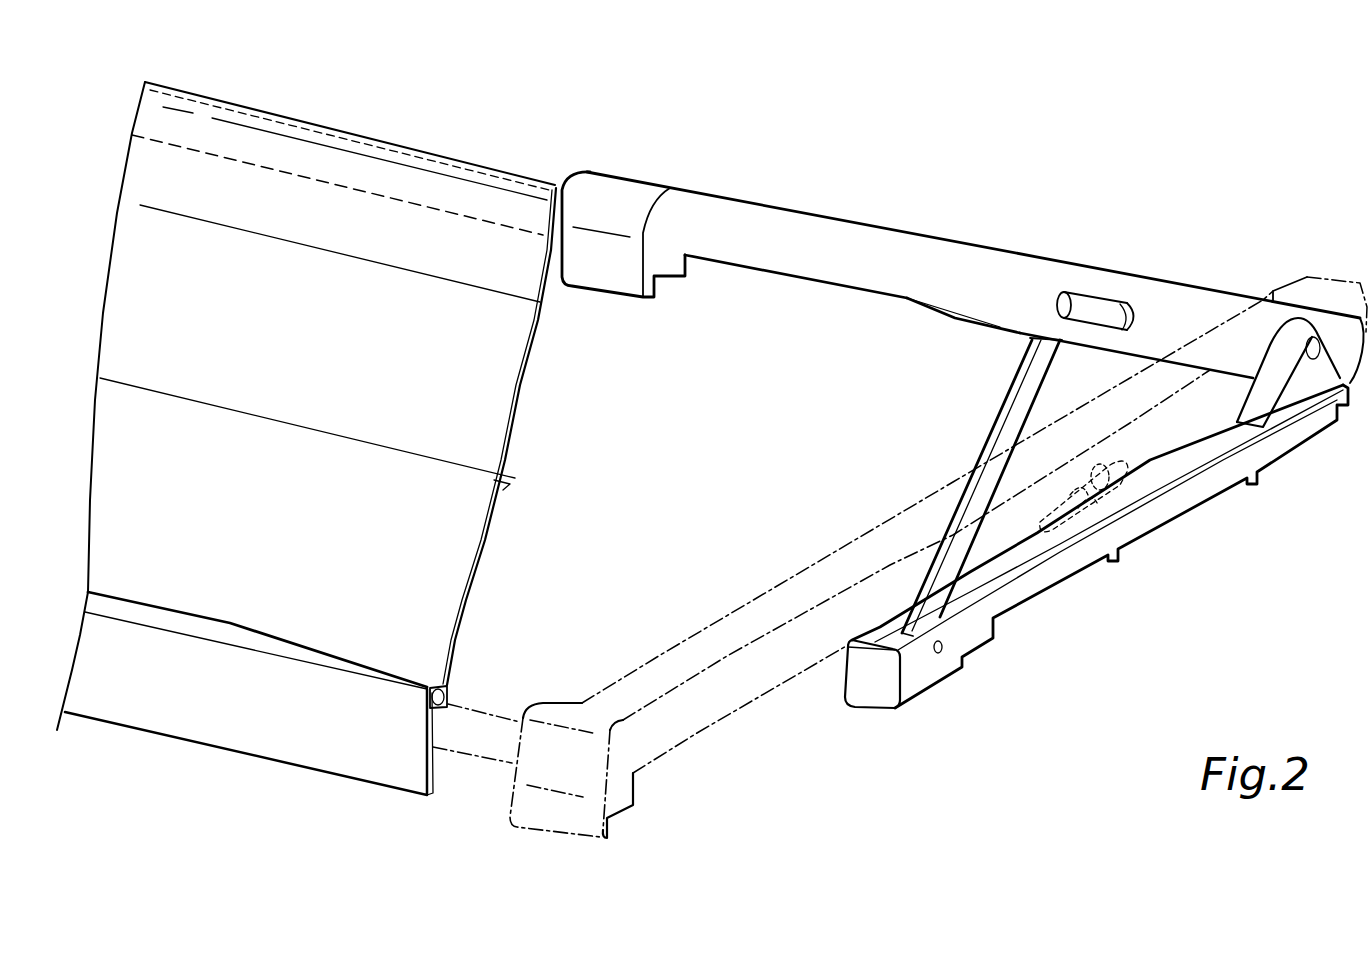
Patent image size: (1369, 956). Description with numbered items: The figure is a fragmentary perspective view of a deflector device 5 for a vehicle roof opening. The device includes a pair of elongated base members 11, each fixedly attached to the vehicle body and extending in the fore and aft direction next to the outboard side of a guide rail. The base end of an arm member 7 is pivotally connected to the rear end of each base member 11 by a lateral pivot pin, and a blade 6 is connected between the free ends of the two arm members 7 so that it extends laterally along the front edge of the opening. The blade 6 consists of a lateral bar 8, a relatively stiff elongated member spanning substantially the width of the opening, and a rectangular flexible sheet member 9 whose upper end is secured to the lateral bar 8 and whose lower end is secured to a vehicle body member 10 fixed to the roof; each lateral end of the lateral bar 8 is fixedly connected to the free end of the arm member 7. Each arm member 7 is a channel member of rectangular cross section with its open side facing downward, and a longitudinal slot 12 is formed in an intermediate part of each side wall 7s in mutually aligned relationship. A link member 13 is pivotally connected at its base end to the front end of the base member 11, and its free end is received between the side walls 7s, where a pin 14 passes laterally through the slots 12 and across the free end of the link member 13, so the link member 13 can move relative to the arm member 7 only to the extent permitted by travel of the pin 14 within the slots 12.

The deflector device 5 is at (880, 117).
The blade 6 is at (222, 100).
The arm member 7 is at (866, 224).
The side wall 7s is at (995, 270).
The lateral bar 8 is at (306, 122).
The flexible sheet member 9 is at (522, 384).
The vehicle body member 10 is at (297, 764).
The base member 11 is at (1297, 450).
The longitudinal slot 12 is at (1140, 313).
The link member 13 is at (1009, 392).
The pin 14 is at (1068, 301).